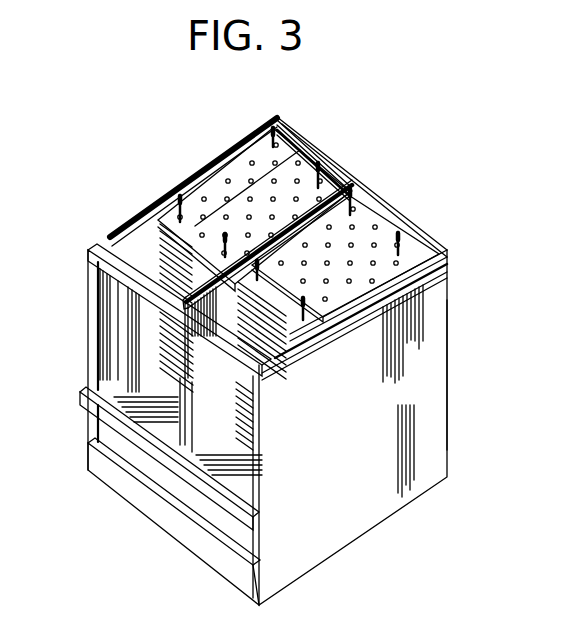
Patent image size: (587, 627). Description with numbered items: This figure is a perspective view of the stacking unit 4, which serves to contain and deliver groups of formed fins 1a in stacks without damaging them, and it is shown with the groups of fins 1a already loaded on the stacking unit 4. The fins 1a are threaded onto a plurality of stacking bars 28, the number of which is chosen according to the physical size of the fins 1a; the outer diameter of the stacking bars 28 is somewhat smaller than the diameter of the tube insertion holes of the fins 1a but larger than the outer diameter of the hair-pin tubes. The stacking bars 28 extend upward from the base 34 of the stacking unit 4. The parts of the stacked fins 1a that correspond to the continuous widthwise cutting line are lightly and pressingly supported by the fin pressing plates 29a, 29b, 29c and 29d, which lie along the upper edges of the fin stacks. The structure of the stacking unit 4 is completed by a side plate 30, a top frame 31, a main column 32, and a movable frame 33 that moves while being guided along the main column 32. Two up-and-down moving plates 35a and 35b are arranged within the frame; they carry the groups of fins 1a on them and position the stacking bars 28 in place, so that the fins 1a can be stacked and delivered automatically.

The fins 1a is at (212, 192).
The stacking unit 4 is at (447, 372).
The stacking bars 28 is at (456, 224).
The fin pressing plate 29a is at (250, 147).
The fin pressing plate 29b is at (350, 182).
The fin pressing plate 29c is at (355, 186).
The fin pressing plate 29d is at (438, 259).
The side plate 30 is at (440, 457).
The top frame 31 is at (88, 250).
The main column 32 is at (96, 341).
The movable frame 33 is at (80, 392).
The base 34 is at (88, 458).
The up-and-down moving plate 35a is at (153, 420).
The up-and-down moving plate 35b is at (224, 480).